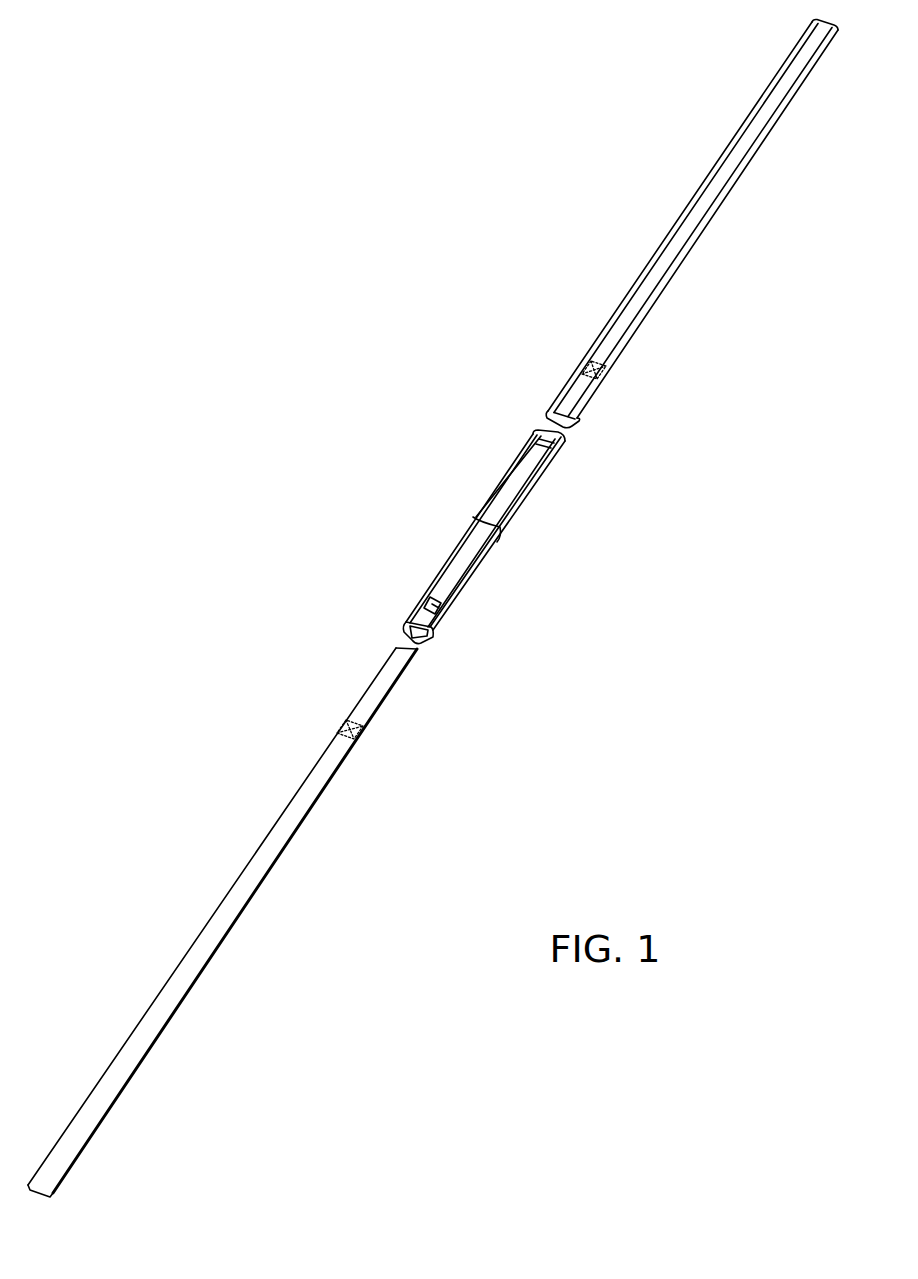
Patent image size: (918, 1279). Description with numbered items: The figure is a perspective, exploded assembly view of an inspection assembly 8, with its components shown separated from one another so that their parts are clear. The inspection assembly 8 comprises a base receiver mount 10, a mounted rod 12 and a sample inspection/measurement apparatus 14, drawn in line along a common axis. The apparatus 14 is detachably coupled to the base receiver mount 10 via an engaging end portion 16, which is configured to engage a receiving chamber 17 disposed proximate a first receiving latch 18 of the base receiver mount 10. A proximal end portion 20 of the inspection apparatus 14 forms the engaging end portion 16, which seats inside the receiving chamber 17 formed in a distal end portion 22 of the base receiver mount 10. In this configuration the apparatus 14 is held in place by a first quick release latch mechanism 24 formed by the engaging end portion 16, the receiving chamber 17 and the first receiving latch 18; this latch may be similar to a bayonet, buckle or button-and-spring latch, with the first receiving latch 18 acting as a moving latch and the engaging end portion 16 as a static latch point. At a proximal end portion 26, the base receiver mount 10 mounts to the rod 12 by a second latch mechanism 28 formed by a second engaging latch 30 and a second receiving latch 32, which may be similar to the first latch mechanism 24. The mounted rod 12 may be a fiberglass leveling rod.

The inspection assembly 8 is at (437, 152).
The base receiver mount 10 is at (523, 488).
The mounted rod 12 is at (692, 223).
The sample inspection/measurement apparatus 14 is at (236, 918).
The engaging end portion 16 is at (360, 733).
The receiving chamber 17 is at (398, 624).
The first receiving latch 18 is at (425, 597).
The proximal end portion 20 is at (387, 660).
The distal end portion 22 is at (487, 597).
The first quick release latch mechanism 24 is at (287, 683).
The proximal end portion 26 is at (520, 412).
The second latch mechanism 28 is at (603, 452).
The second engaging latch 30 is at (528, 438).
The second receiving latch 32 is at (603, 377).